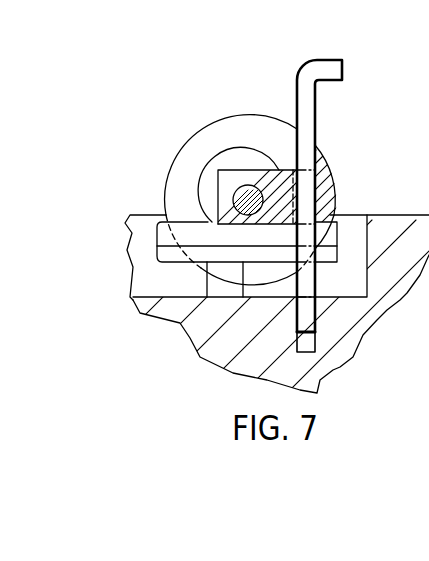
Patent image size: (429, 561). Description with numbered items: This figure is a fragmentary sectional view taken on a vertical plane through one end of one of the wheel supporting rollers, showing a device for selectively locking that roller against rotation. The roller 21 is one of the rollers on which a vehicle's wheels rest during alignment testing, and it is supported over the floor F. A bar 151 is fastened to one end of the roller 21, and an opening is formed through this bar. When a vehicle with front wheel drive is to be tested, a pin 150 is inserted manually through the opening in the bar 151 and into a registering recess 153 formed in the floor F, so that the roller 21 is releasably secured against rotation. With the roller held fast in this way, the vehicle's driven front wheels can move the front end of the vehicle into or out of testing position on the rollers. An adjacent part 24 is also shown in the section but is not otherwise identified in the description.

The pin 150 is at (299, 66).
The roller 21 is at (218, 120).
The block 151 is at (217, 171).
The plate 24 is at (207, 198).
The frame F is at (397, 215).
The pin tip 153 is at (310, 343).